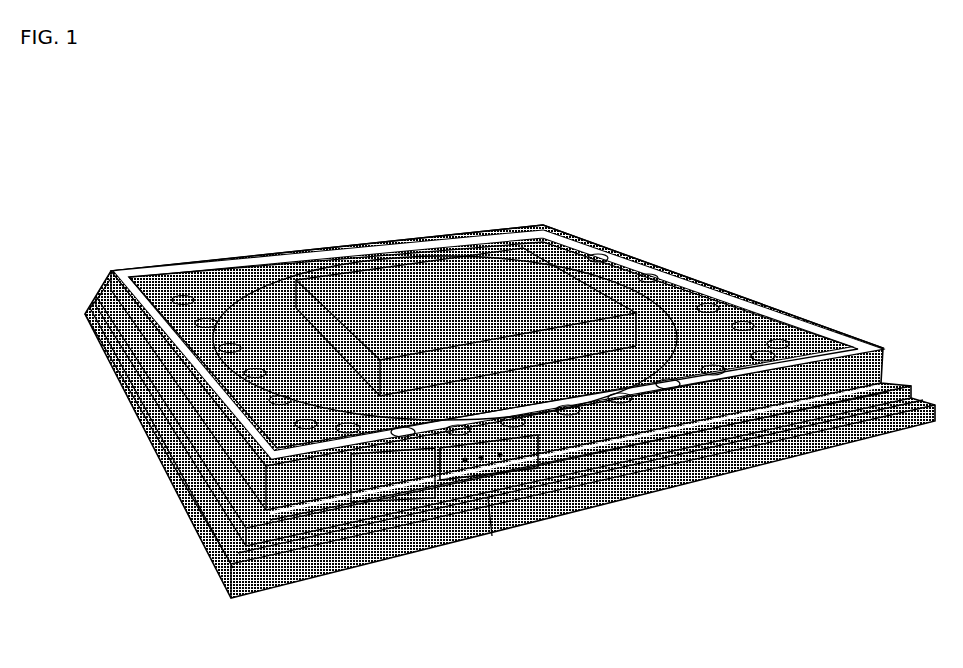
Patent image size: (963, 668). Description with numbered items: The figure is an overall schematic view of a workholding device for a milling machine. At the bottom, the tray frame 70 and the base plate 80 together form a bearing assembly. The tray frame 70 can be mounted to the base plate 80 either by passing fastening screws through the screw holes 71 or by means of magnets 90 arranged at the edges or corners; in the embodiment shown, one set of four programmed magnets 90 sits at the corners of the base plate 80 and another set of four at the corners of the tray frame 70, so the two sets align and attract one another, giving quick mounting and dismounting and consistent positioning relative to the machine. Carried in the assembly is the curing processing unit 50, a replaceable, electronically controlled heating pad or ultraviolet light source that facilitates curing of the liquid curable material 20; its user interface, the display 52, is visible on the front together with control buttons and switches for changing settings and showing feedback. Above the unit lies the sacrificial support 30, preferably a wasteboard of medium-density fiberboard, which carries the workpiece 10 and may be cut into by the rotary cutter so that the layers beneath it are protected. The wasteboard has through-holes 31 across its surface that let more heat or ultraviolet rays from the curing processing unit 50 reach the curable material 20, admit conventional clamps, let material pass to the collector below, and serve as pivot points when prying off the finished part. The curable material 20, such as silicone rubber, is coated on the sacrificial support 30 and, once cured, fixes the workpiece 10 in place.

The workpiece 10 is at (550, 220).
The liquid curable material 20 is at (497, 335).
The sacrificial support 30 is at (640, 250).
The through-holes 31 is at (720, 283).
The curing processing unit 50 is at (757, 298).
The display 52 is at (480, 527).
The tray frame 70 is at (362, 558).
The screw holes 71 is at (690, 450).
The base plate 80 is at (683, 473).
The magnets 90 is at (175, 505).